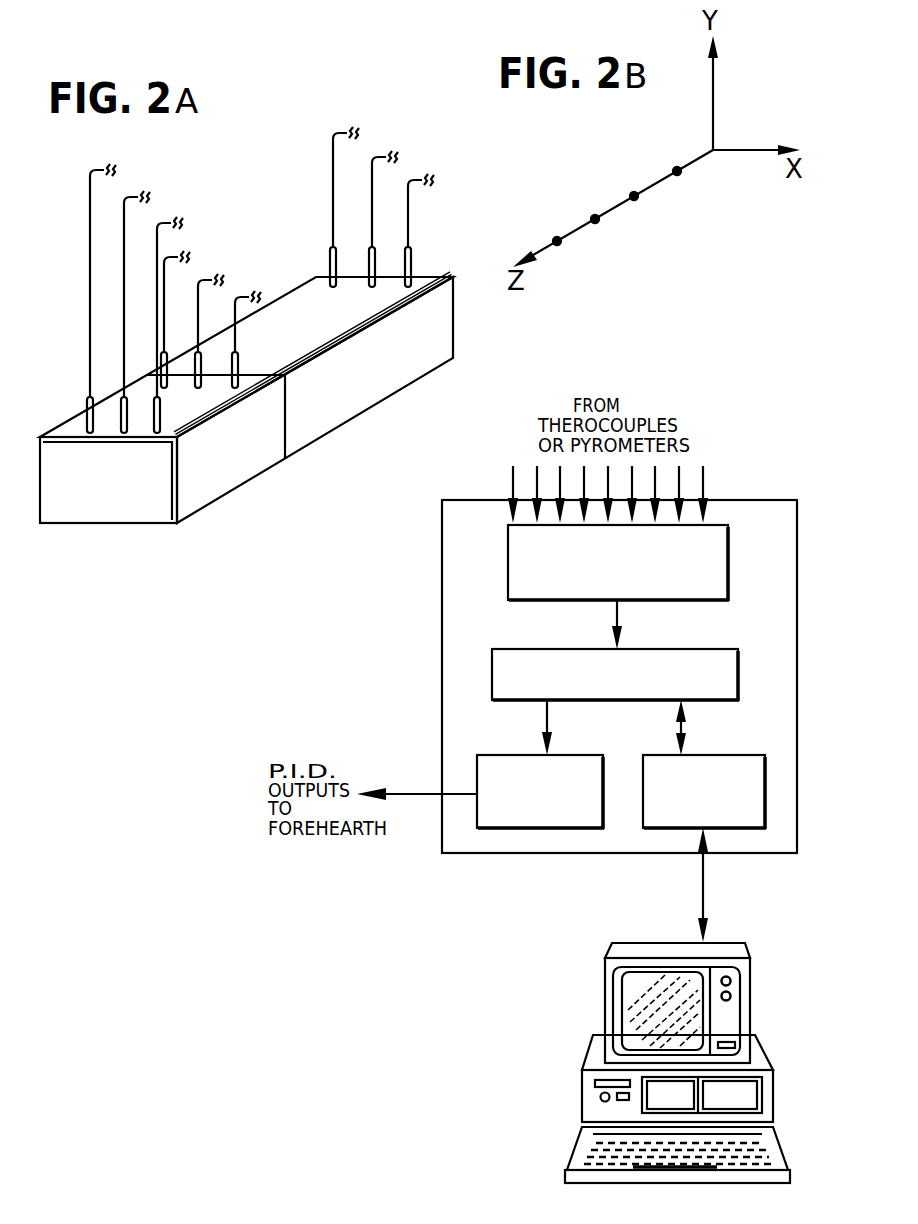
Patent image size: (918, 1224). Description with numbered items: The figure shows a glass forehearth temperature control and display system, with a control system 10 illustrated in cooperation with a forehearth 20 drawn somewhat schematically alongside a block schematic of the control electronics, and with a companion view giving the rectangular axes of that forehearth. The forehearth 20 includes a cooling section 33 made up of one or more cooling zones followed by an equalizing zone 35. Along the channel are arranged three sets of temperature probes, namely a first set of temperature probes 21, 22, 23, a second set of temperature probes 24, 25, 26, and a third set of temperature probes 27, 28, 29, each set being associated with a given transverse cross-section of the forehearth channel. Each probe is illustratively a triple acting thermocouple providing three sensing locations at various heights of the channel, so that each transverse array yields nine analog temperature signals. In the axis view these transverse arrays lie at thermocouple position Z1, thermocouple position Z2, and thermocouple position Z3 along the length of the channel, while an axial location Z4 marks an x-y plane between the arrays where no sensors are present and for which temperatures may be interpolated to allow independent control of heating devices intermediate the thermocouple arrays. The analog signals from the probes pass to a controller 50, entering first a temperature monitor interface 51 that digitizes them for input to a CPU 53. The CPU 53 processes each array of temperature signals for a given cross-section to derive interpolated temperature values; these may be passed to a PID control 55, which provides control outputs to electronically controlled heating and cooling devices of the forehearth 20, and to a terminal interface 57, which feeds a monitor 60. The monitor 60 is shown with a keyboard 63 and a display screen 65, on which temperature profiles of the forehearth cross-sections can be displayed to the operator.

In FIG. 2A, the control system 10 is at (283, 623).
In FIG. 2A, the forehearth 20 is at (335, 447).
In FIG. 2A, the temperature probe 21 is at (329, 220).
In FIG. 2A, the temperature probe 22 is at (368, 232).
In FIG. 2A, the temperature probe 23 is at (405, 243).
In FIG. 2A, the temperature probe 24 is at (180, 319).
In FIG. 2A, the temperature probe 25 is at (215, 331).
In FIG. 2A, the temperature probe 26 is at (252, 339).
In FIG. 2A, the temperature probe 27 is at (86, 298).
In FIG. 2A, the temperature probe 28 is at (138, 312).
In FIG. 2A, the temperature probe 29 is at (175, 325).
In FIG. 2A, the cooling section 33 is at (350, 398).
In FIG. 2A, the equalizing zone 35 is at (210, 487).
In FIG. 2B, the controller 50 is at (767, 500).
In FIG. 2B, the temperature monitor interface 51 is at (729, 586).
In FIG. 2B, the CPU 53 is at (660, 650).
In FIG. 2B, the PID control 55 is at (568, 755).
In FIG. 2B, the terminal interface 57 is at (718, 755).
In FIG. 2B, the monitor 60 is at (580, 1096).
In FIG. 2B, the keyboard 63 is at (594, 1156).
In FIG. 2B, the display screen 65 is at (645, 1018).
In FIG. 2B, the thermocouple position Z1 is at (692, 187).
In FIG. 2B, the thermocouple position Z2 is at (612, 233).
In FIG. 2B, the thermocouple position Z3 is at (573, 257).
In FIG. 2B, the axial location Z4 is at (650, 211).